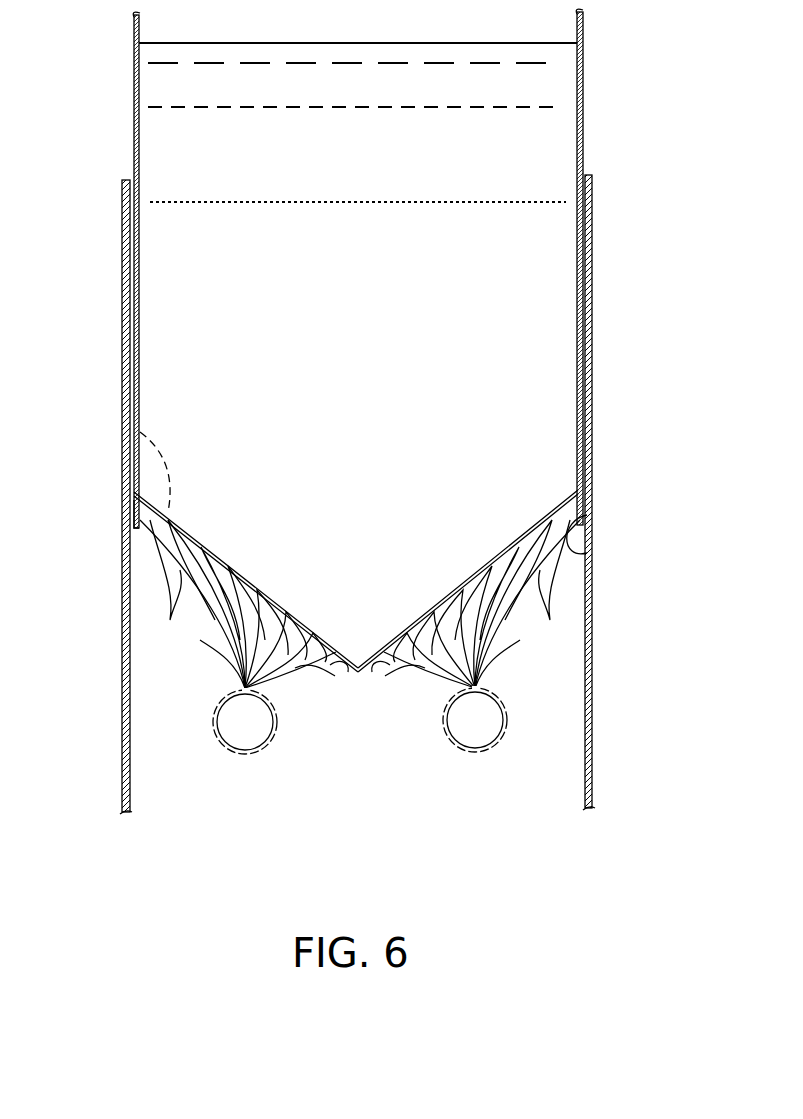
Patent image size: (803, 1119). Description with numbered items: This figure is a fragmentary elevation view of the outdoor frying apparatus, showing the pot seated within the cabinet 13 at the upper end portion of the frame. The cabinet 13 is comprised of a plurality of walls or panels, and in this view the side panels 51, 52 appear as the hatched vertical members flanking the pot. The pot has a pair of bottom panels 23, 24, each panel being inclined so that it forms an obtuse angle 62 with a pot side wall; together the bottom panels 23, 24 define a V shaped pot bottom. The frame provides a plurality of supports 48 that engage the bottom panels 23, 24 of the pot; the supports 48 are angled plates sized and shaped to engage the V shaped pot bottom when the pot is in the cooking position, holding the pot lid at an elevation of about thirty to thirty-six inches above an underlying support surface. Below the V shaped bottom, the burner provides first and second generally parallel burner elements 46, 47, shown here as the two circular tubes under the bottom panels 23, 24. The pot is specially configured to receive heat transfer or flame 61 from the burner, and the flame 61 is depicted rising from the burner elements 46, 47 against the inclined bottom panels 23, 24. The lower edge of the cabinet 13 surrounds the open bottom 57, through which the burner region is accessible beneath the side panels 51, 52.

The cabinet 13 is at (591, 640).
The bottom panel 23 is at (216, 556).
The bottom panel 24 is at (507, 547).
The burner element 46 is at (268, 750).
The burner element 47 is at (494, 746).
The support 48 is at (150, 555).
The side panel 51 is at (131, 645).
The side panel 52 is at (590, 700).
The open bottom 57 is at (192, 822).
The flame 61 is at (292, 658).
The obtuse angle 62 is at (164, 448).